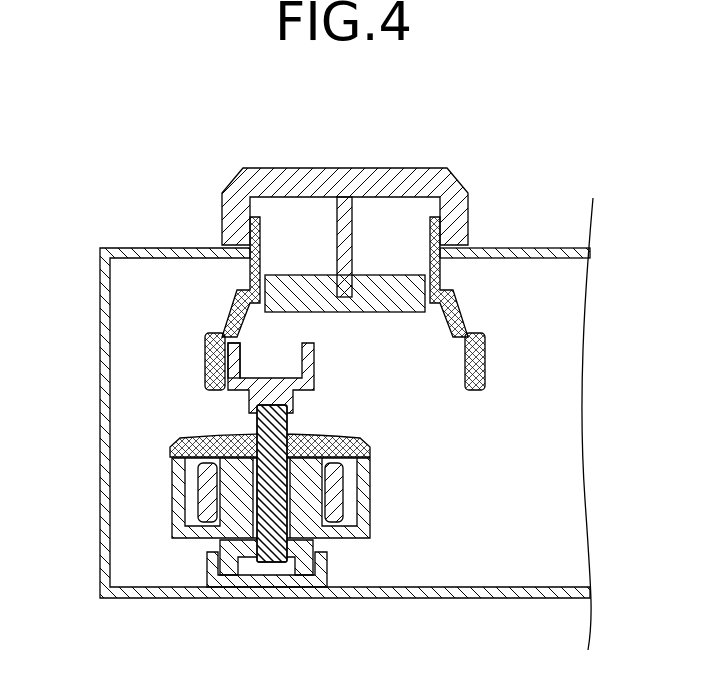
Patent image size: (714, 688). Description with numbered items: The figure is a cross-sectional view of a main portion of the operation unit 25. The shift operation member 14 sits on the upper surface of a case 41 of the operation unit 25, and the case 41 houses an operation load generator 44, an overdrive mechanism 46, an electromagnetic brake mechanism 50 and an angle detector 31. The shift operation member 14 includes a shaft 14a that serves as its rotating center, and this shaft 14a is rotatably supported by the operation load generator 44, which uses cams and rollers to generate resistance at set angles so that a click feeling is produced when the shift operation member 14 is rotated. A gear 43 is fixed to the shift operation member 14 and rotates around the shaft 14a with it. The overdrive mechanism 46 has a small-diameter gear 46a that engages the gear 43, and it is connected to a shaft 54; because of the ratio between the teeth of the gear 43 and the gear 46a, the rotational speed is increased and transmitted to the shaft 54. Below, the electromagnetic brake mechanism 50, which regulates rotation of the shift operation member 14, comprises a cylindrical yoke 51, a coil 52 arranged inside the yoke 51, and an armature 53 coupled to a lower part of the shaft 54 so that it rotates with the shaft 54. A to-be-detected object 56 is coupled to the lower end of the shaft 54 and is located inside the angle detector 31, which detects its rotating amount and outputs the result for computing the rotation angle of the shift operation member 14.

The shift operation member 14 is at (416, 168).
The shaft 14a is at (355, 224).
The operation unit 25 is at (534, 137).
The angle detector 31 is at (330, 588).
The case 41 is at (100, 258).
The gear 43 is at (464, 380).
The operation load generator 44 is at (413, 315).
The overdrive mechanism 46 is at (314, 388).
The small-diameter gear 46a is at (241, 357).
The electromagnetic brake mechanism 50 is at (307, 503).
The yoke 51 is at (371, 530).
The coil 52 is at (198, 507).
The armature 53 is at (371, 452).
The shaft 54 is at (245, 426).
The to-be-detected object 56 is at (314, 547).